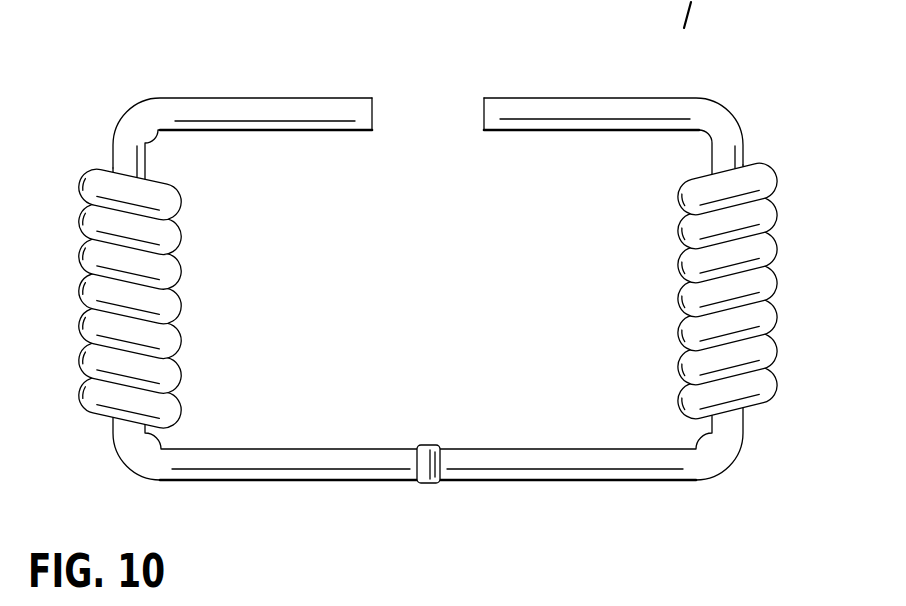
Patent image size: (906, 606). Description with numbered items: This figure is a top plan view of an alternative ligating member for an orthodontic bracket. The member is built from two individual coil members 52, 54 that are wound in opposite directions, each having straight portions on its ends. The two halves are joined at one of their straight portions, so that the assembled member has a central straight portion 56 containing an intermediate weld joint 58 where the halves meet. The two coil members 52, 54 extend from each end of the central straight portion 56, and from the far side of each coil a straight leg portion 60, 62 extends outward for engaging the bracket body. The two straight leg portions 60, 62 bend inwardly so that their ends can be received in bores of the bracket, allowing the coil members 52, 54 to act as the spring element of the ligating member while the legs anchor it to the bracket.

The coil member 52 is at (83, 280).
The coil member 54 is at (780, 272).
The central straight portion 56 is at (263, 481).
The intermediate weld joint 58 is at (429, 445).
The straight leg portion 60 is at (236, 98).
The straight leg portion 62 is at (583, 97).